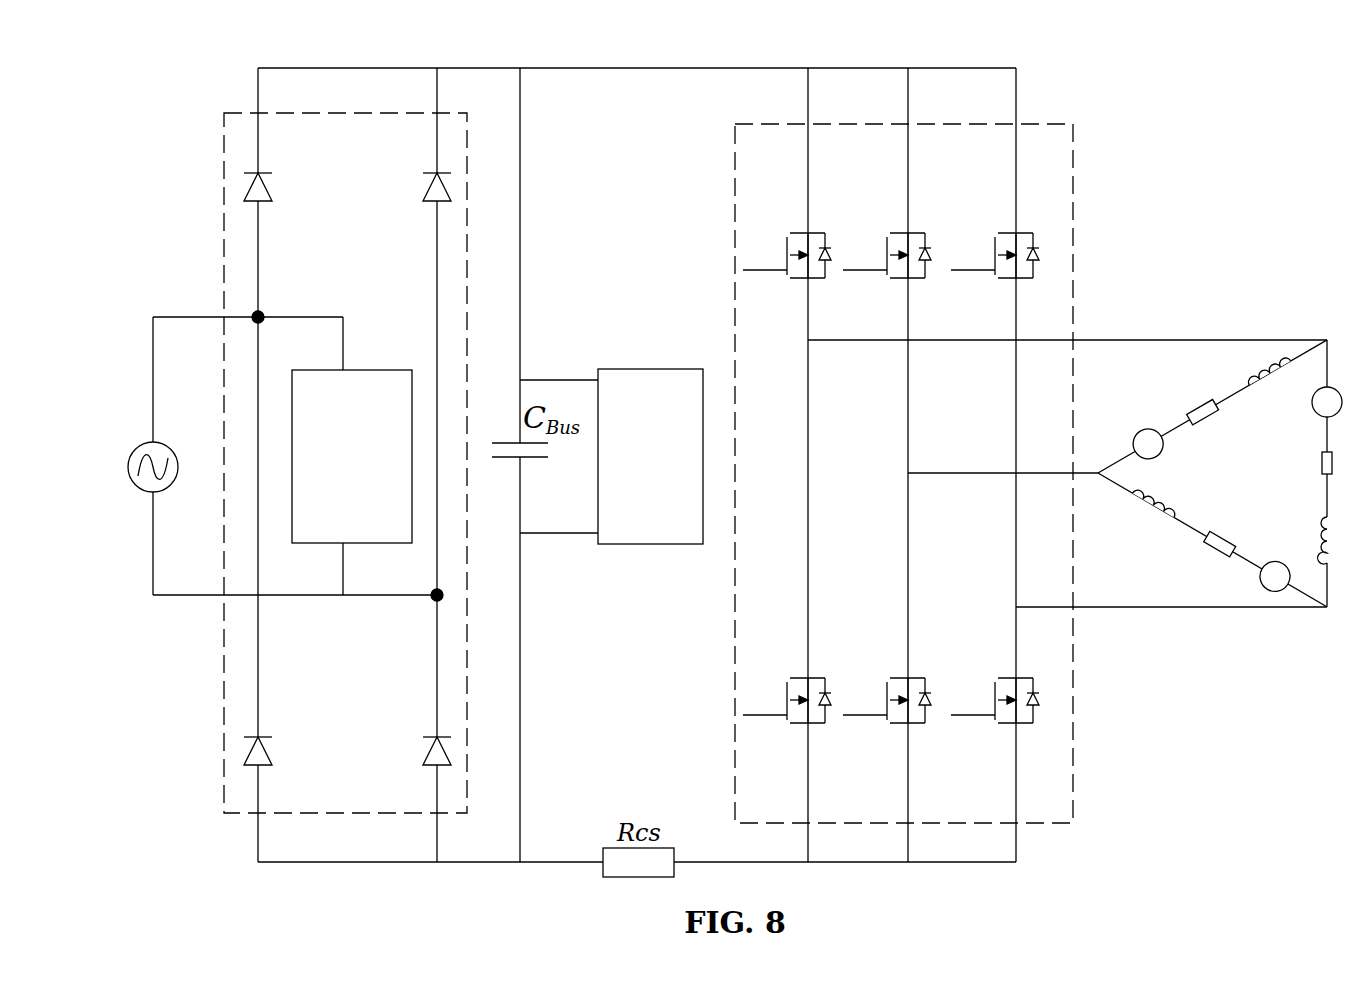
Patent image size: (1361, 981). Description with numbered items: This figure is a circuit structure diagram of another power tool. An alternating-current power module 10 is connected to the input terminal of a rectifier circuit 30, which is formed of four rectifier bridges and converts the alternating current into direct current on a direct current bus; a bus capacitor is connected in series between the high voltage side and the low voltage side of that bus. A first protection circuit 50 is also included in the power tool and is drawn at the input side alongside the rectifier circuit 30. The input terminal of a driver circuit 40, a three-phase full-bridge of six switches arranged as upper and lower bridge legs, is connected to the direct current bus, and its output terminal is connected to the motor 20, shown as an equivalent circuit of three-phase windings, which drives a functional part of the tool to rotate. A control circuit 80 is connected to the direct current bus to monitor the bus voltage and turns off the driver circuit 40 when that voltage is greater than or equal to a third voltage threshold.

The power module 10 is at (166, 437).
The motor 20 is at (1252, 332).
The rectifier circuit 30 is at (225, 113).
The driver circuit 40 is at (1037, 124).
The first protection circuit 50 is at (343, 370).
The control circuit 80 is at (650, 369).